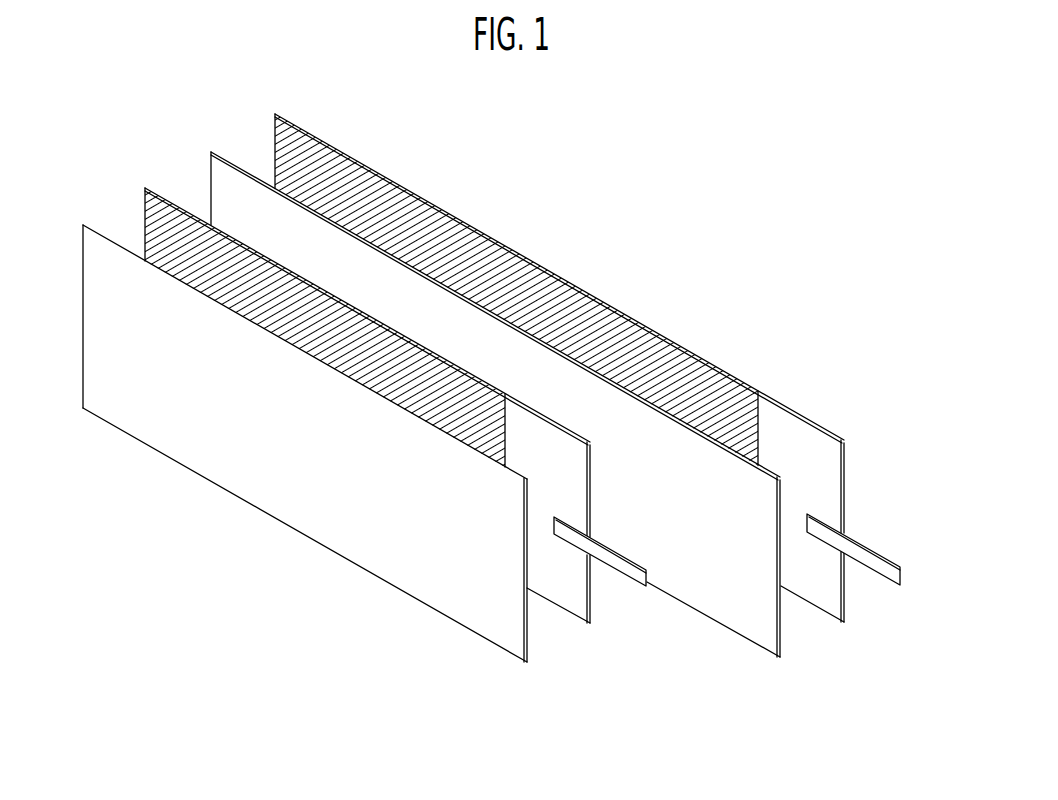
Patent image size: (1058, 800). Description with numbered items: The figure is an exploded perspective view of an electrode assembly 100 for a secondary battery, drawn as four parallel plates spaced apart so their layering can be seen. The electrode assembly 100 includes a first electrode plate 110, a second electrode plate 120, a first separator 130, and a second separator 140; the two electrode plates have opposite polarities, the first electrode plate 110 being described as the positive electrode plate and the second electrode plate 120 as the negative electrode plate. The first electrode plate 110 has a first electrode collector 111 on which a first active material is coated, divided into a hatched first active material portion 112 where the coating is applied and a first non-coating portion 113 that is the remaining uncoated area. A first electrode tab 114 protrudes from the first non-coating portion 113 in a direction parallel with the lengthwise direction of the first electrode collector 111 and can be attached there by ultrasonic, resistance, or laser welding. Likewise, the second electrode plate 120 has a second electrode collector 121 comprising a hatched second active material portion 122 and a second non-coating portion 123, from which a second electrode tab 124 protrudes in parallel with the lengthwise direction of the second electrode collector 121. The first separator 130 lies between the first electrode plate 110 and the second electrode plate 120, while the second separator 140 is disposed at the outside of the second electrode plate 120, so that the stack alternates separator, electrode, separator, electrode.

The electrode assembly 100 is at (708, 250).
The first electrode plate 110 is at (848, 613).
The first electrode collector 111 is at (843, 587).
The first active material portion 112 is at (557, 300).
The first non-coating portion 113 is at (783, 425).
The first electrode tab 114 is at (858, 550).
The second electrode plate 120 is at (597, 610).
The second electrode collector 121 is at (577, 623).
The second active material portion 122 is at (362, 378).
The second non-coating portion 123 is at (548, 585).
The second electrode tab 124 is at (600, 548).
The first separator 130 is at (790, 635).
The second separator 140 is at (483, 648).